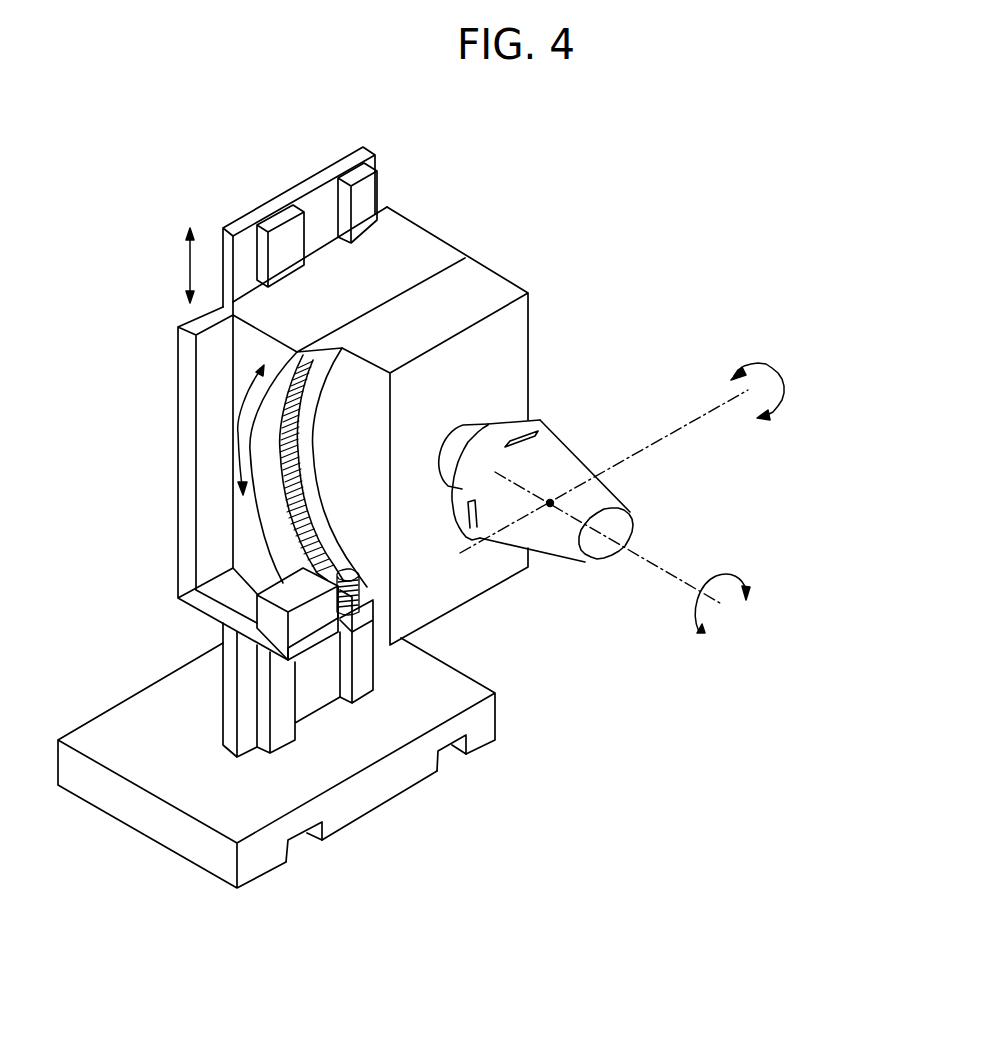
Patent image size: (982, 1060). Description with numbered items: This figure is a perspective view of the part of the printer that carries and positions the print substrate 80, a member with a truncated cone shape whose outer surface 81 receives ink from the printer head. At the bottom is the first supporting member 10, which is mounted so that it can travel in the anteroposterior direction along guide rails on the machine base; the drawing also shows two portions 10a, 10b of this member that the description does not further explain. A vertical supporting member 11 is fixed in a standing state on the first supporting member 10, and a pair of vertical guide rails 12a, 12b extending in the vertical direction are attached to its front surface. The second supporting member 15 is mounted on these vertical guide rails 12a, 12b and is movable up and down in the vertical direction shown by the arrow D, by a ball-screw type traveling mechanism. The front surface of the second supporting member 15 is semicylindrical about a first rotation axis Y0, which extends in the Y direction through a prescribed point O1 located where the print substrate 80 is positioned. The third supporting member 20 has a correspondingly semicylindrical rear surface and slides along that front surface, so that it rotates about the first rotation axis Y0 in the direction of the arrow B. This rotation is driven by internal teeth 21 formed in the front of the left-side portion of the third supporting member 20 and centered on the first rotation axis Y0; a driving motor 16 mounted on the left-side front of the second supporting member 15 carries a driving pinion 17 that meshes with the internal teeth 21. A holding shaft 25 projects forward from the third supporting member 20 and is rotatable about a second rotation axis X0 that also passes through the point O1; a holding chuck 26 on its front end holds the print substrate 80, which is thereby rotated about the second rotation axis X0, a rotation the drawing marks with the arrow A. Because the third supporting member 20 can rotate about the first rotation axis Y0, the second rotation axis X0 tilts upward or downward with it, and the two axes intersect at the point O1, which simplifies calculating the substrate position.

The first supporting member 10 is at (284, 775).
The notch of base 10a is at (435, 770).
The notch of base 10b is at (303, 832).
The vertical supporting member 11 is at (243, 677).
The vertical guide rail 12a is at (277, 710).
The vertical guide rail 12b is at (367, 675).
The second supporting member 15 is at (412, 238).
The driving motor 16 is at (282, 597).
The driving pinion 17 is at (358, 585).
The third supporting member 20 is at (485, 290).
The internal teeth 21 is at (262, 518).
The holding shaft 25 is at (473, 423).
The holding chuck 26 is at (547, 423).
The print substrate 80 is at (546, 484).
The outer surface 81 is at (563, 468).
The prescribed point O1 is at (551, 506).
The second rotation axis X0 is at (655, 559).
The first rotation axis Y0 is at (703, 413).
The A rotation direction A is at (728, 577).
The arrow B is at (780, 376).
The arrow D(z) D is at (185, 265).